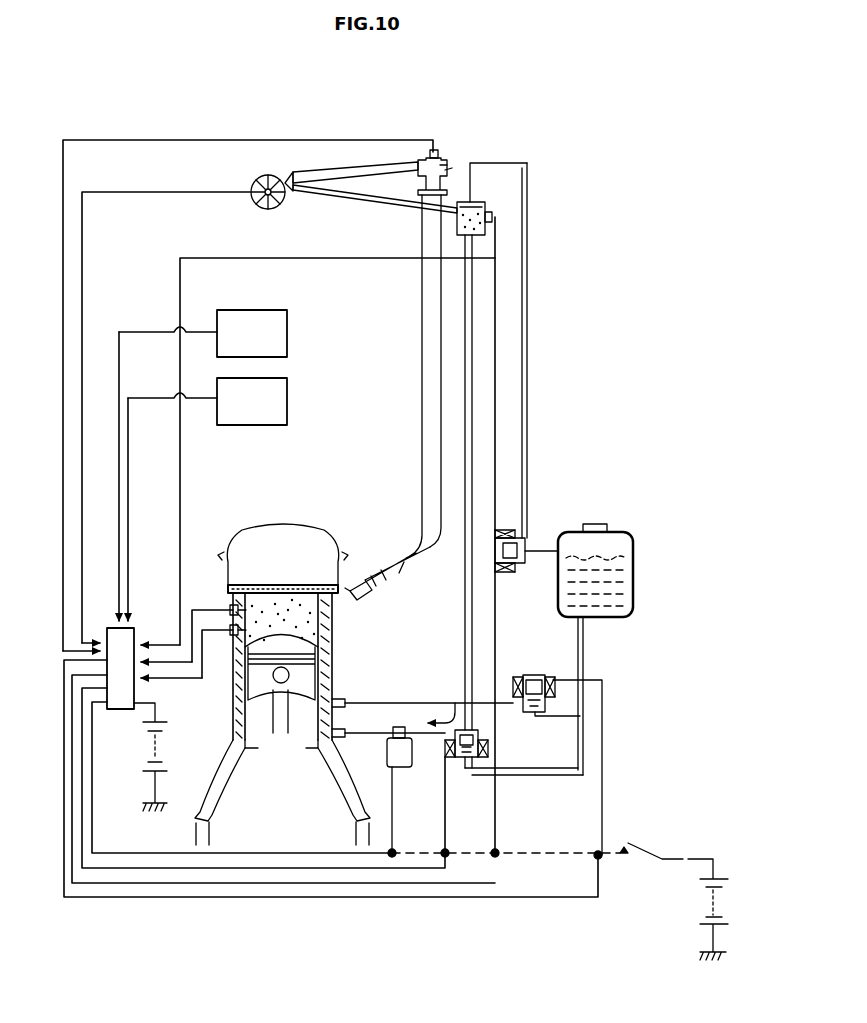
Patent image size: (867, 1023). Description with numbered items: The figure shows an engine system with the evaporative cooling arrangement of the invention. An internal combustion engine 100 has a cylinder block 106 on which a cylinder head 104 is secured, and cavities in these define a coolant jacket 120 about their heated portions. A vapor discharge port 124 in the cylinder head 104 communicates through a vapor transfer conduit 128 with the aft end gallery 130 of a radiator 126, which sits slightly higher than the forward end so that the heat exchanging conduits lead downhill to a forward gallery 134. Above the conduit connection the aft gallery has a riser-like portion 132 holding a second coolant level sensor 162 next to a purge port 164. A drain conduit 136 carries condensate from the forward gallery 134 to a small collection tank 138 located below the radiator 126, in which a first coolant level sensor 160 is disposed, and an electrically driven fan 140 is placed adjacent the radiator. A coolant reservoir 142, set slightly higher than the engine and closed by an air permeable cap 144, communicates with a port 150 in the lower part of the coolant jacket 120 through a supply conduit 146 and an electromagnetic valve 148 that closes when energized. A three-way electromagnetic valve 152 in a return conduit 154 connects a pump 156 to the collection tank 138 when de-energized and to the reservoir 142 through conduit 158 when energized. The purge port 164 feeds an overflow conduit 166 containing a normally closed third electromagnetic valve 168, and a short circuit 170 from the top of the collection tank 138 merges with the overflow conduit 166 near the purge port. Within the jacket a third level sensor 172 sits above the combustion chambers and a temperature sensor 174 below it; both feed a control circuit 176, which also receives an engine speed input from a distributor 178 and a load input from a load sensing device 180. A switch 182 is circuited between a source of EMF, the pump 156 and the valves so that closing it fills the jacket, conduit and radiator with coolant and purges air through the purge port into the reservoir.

The internal combustion engine 100 is at (348, 660).
The cylinder head 104 is at (262, 587).
The cylinder block 106 is at (229, 770).
The coolant jacket 120 is at (333, 622).
The vapor discharge port 124 is at (342, 584).
The radiator 126 is at (331, 158).
The vapor transfer conduit 128 is at (420, 438).
The aft end gallery 130 is at (418, 163).
The riser-like portion 132 is at (432, 150).
The forward gallery 134 is at (287, 176).
The drain conduit 136 is at (360, 205).
The collection tank 138 is at (470, 205).
The electrically driven fan 140 is at (250, 181).
The coolant reservoir 142 is at (622, 551).
The air permeable cap 144 is at (598, 524).
The supply conduit 146 is at (448, 701).
The electromagnetic valve 148 is at (536, 676).
The port 150 is at (335, 709).
The three-way electromagnetic valve 152 is at (426, 748).
The return conduit 154 is at (465, 620).
The pump 156 is at (404, 769).
The conduit 158 is at (546, 776).
The first coolant level sensor 160 is at (492, 217).
The second coolant level sensor 162 is at (447, 162).
The purge port 164 is at (452, 170).
The overflow conduit 166 is at (528, 364).
The third electromagnetic valve 168 is at (525, 540).
The short circuit 170 is at (527, 166).
The third level sensor 172 is at (231, 608).
The temperature sensor 174 is at (231, 636).
The control circuit 176 is at (119, 710).
The engine distributor 178 is at (288, 335).
The load sensing device 180 is at (288, 401).
The switch 182 is at (642, 860).